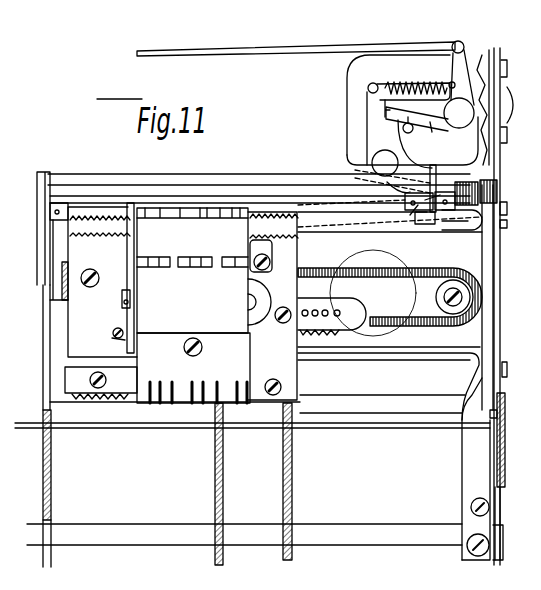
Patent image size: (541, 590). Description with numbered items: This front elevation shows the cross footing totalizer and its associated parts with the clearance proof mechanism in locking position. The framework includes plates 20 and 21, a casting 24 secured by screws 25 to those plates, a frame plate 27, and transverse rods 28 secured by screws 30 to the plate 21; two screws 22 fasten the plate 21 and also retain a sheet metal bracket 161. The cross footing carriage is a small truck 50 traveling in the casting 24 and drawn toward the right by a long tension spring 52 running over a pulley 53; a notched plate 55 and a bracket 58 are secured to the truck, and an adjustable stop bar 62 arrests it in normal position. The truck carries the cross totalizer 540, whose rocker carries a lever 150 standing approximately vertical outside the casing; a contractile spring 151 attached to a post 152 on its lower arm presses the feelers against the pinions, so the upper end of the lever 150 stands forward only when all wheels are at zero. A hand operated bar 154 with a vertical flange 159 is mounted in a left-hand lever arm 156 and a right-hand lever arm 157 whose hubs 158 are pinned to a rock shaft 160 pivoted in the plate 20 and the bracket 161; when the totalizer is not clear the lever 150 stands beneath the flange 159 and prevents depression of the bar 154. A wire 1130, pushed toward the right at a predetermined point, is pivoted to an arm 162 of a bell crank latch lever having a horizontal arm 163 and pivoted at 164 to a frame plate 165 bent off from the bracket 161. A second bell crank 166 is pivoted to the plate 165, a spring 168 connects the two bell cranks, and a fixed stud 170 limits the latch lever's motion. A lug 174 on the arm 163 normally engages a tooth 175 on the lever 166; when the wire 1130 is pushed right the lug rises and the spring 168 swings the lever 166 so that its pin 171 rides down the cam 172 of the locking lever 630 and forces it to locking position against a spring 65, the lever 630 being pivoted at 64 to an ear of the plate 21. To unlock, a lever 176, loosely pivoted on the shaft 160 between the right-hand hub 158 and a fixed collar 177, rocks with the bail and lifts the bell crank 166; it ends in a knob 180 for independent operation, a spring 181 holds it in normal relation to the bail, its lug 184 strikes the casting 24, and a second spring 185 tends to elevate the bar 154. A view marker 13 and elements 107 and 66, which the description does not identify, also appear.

The wire 1130 is at (209, 52).
The section line 13- 13 is at (287, 24).
The hand operated bar 154 is at (172, 176).
The vertical flange part 159 is at (217, 190).
The left-hand lever arm 156 is at (48, 252).
The truck 50 is at (102, 282).
The bracket 58 is at (68, 290).
The lever 150 is at (120, 278).
The contractile spring 151 is at (108, 334).
The post 152 is at (123, 346).
The cross totalizer 540 is at (192, 270).
The plate 55 is at (271, 250).
The tension spring 52 is at (390, 312).
The pulley 53 is at (442, 301).
The adjustable stop bar 62 is at (348, 305).
The spring 181 is at (473, 230).
The plate 21 is at (497, 272).
The screws 22 is at (501, 107).
The sheet metal frame plate 165 is at (347, 76).
The arm 162 is at (465, 52).
The pivot 164 is at (459, 113).
The pin 171 is at (463, 167).
The second bell crank 166 is at (367, 136).
The spring 168 is at (401, 86).
The lug 174 is at (401, 109).
The tooth 175 is at (398, 121).
The fixed stud 170 is at (412, 134).
The horizontal arm 163 is at (438, 131).
The shaft 107 is at (385, 163).
The fixed collar 177 is at (392, 182).
The lever 176 is at (403, 214).
The rock shaft 160 is at (372, 200).
The knob 180 is at (423, 220).
The hubs 158 is at (462, 220).
The right-hand lever arm 157 is at (455, 227).
The lug 184 is at (435, 230).
The bracket 161 is at (500, 179).
The incline or cam 172 is at (470, 180).
The second spring 185 is at (507, 209).
The screws 25 is at (512, 298).
The transverse rods 28 is at (385, 398).
The casting 24 is at (441, 363).
The rod 66 is at (385, 428).
The plate 20 is at (51, 474).
The screws 30 is at (509, 412).
The frame plate 27 is at (292, 476).
The locking lever 630 is at (462, 470).
The spring 65 is at (503, 487).
The pivot 64 is at (468, 551).